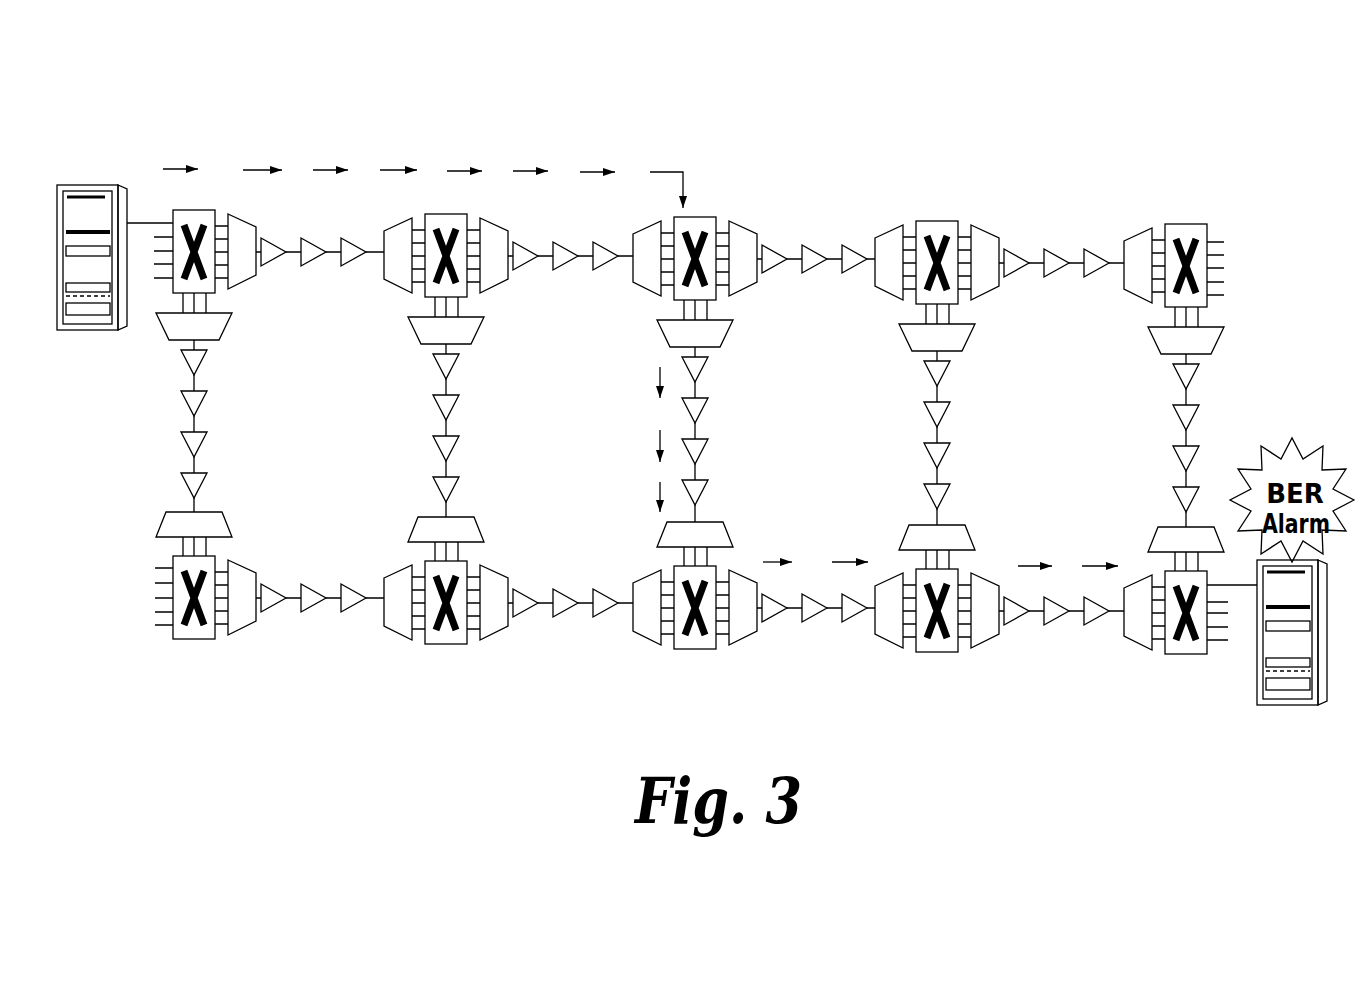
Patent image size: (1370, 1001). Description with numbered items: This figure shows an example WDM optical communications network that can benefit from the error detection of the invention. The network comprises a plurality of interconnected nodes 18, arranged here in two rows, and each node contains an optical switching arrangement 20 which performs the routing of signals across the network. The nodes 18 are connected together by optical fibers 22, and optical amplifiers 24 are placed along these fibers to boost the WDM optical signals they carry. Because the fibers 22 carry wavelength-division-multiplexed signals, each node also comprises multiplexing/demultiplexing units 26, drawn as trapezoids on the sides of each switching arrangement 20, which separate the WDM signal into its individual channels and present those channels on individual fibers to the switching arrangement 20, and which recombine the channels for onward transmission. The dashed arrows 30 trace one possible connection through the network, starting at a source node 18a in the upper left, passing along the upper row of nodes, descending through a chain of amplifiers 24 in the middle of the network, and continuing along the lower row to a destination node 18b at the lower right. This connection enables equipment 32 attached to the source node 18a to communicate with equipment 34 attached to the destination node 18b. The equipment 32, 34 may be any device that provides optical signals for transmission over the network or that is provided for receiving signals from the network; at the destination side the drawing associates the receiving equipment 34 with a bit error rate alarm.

The node 18 is at (936, 227).
The source node 18a is at (217, 173).
The destination node 18b is at (1152, 675).
The optical switching arrangement 20 is at (713, 295).
The optical fiber 22 is at (450, 427).
The optical amplifier 24 is at (200, 445).
The multiplexing/demultiplexing unit 26 is at (407, 283).
The arrows 30 is at (386, 168).
The equipment 32 is at (103, 330).
The equipment 34 is at (1300, 703).